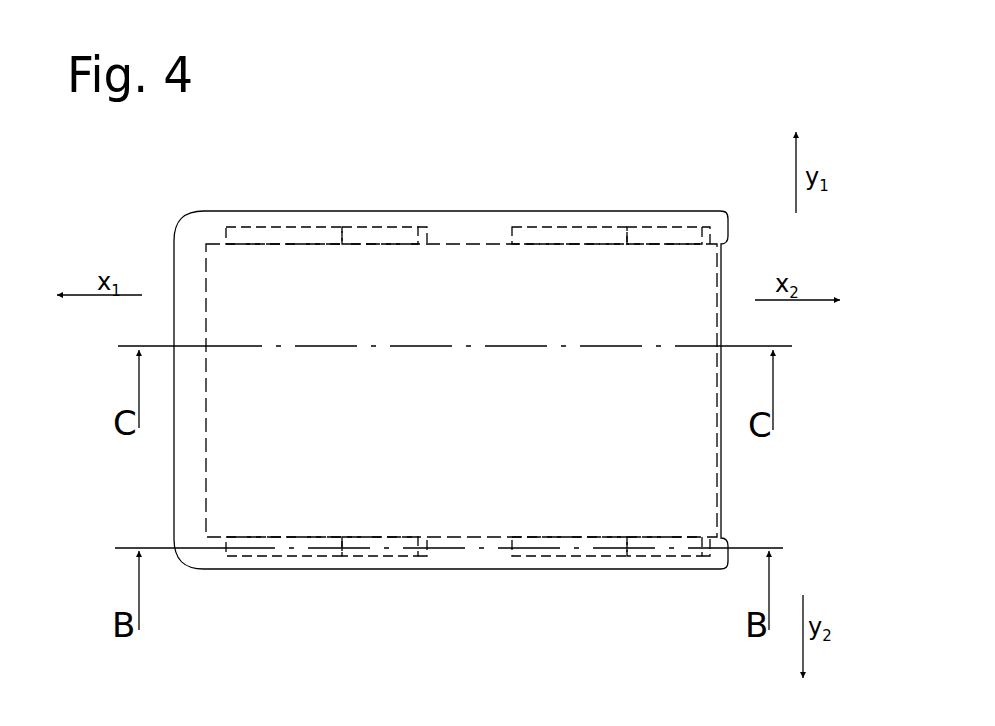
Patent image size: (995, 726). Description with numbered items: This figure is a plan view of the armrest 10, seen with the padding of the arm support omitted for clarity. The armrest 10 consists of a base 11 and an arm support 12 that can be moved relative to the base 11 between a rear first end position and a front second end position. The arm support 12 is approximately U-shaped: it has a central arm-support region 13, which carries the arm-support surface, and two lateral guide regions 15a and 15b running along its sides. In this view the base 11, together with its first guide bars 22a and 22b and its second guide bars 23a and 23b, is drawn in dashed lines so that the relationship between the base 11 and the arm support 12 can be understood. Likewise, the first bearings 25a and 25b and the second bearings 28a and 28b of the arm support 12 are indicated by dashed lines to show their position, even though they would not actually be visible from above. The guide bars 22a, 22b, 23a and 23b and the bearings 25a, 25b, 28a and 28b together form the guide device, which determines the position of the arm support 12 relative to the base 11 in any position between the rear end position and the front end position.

The armrest 10 is at (728, 137).
The base 11 is at (262, 468).
The arm support 12 is at (197, 240).
The central arm-support region 13 is at (415, 441).
The lateral guide region 15a is at (477, 212).
The lateral guide region 15b is at (478, 571).
The first guide bar 22a is at (300, 233).
The first guide bar 22b is at (289, 555).
The second guide bar 23a is at (570, 233).
The second guide bar 23b is at (593, 555).
The first bearing 25a is at (381, 218).
The first bearing 25b is at (375, 563).
The second bearing 28a is at (653, 218).
The second bearing 28b is at (658, 563).